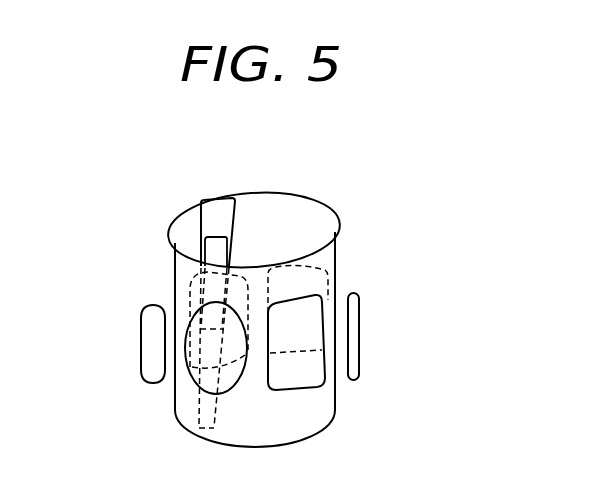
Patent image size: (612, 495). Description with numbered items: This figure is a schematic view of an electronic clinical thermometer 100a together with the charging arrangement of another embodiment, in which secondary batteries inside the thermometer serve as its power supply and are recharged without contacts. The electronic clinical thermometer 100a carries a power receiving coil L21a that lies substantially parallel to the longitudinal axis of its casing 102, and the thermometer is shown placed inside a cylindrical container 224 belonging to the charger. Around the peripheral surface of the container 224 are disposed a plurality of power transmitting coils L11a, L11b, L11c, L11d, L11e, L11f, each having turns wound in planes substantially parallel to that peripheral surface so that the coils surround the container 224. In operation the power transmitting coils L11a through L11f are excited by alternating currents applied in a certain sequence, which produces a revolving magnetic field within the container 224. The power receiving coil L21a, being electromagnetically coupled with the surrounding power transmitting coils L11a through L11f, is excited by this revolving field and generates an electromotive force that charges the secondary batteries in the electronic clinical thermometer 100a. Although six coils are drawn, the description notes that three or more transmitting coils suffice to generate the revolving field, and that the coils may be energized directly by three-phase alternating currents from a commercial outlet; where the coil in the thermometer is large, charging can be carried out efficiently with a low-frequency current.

The electronic clinical thermometer 100a is at (231, 151).
The casing 102 is at (235, 199).
The container 224 is at (338, 217).
The power receiving coil L21a is at (203, 240).
The power transmitting coil L11a is at (138, 345).
The power transmitting coil L11b is at (197, 390).
The power transmitting coil L11c is at (315, 387).
The power transmitting coil L11d is at (358, 338).
The power transmitting coil L11e is at (327, 265).
The power transmitting coil L11f is at (190, 287).